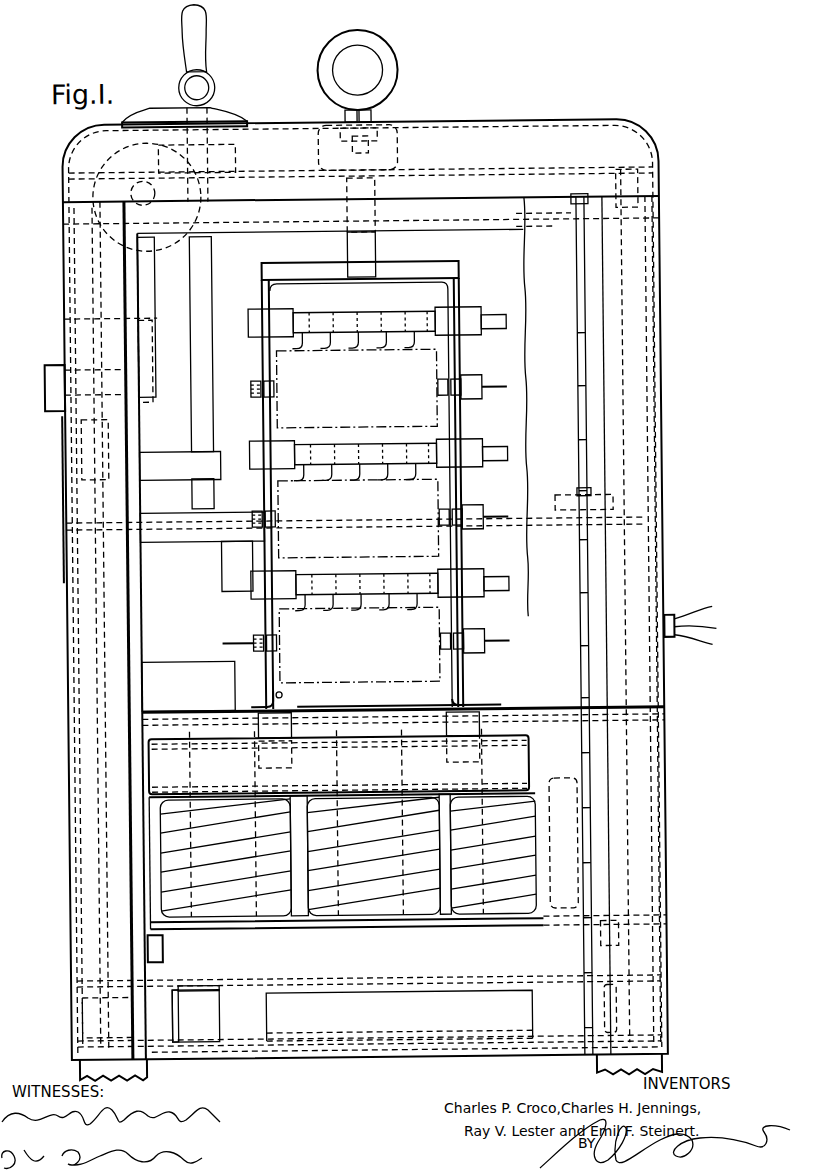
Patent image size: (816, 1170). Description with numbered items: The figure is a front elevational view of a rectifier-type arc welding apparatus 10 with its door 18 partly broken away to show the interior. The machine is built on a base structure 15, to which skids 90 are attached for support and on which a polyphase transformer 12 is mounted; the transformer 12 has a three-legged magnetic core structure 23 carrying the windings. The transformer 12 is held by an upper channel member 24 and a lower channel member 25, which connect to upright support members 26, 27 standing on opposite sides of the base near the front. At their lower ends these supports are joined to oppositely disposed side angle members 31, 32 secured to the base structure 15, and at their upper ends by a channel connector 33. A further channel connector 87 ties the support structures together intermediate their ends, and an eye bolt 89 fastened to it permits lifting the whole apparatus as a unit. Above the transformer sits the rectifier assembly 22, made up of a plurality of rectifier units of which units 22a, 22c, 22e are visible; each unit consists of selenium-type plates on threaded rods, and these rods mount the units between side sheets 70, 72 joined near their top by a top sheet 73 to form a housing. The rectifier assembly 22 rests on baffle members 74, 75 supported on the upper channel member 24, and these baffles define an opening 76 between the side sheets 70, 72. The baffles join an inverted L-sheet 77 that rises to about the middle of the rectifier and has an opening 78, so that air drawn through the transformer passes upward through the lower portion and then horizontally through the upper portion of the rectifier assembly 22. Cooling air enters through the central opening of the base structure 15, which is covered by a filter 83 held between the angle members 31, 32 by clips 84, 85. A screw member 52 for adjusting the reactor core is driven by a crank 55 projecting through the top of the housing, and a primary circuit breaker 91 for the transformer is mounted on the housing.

The arc welding apparatus 10 is at (478, 107).
The polyphase transformer 12 is at (367, 952).
The base structure 15 is at (500, 1062).
The door 18 is at (527, 252).
The rectifier assembly 22 is at (365, 473).
The rectifier unit 22a is at (440, 411).
The rectifier unit 22c is at (440, 483).
The rectifier unit 22e is at (440, 613).
The three-legged magnetic core structure 23 is at (186, 752).
The upper channel member 24 is at (147, 745).
The lower channel member 25 is at (144, 940).
The upright support member 26 is at (74, 676).
The upright support member 27 is at (662, 786).
The side angle member 31 is at (100, 1010).
The side angle member 32 is at (657, 1016).
The channel connector 33 is at (536, 172).
The screw member 52 is at (212, 276).
The crank 55 is at (207, 42).
The side sheet 70 is at (266, 600).
The side sheet 72 is at (464, 352).
The top sheet 73 is at (316, 264).
The baffle member 74 is at (160, 709).
The baffle member 75 is at (500, 698).
The opening 76 is at (324, 708).
The inverted L-sheet 77 is at (158, 600).
The opening 78 is at (270, 694).
The filter 83 is at (518, 1028).
The clip 84 is at (392, 1040).
The clip 85 is at (194, 1000).
The channel connector 87 is at (396, 152).
The eye bolt 89 is at (392, 55).
The skids 90 is at (76, 1063).
The primary circuit breaker 91 is at (156, 346).